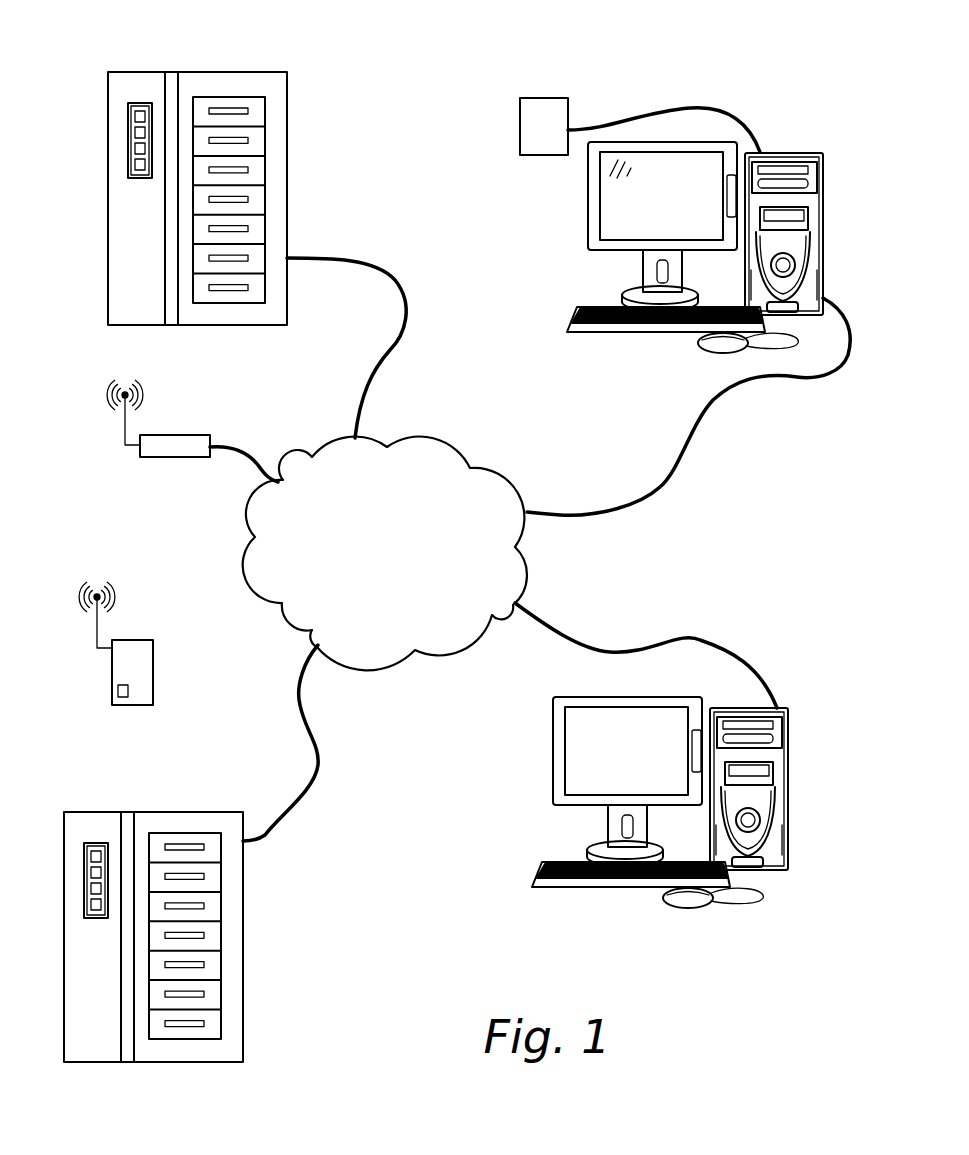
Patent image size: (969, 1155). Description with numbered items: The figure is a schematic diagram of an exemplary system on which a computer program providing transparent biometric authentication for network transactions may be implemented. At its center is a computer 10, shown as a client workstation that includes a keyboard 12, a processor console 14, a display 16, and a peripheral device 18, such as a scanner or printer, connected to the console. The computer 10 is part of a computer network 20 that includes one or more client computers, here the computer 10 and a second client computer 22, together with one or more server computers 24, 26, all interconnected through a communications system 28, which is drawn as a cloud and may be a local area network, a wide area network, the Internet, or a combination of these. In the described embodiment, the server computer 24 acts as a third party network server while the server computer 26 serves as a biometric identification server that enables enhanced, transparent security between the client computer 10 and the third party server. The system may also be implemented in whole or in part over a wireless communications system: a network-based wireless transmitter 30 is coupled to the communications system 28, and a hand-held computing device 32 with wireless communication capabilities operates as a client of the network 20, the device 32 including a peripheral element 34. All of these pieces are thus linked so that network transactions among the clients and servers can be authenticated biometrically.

The computer 10 is at (669, 278).
The keyboard 12 is at (647, 332).
The processor console 14 is at (827, 190).
The display 16 is at (587, 208).
The peripheral device 18 is at (520, 130).
The computer network 20 is at (687, 709).
The client computer 22 is at (790, 753).
The server computer 24 is at (203, 72).
The server computer 26 is at (237, 953).
The communications system 28 is at (440, 647).
The network-based wireless transmitter 30 is at (178, 435).
The hand-held computing device 32 is at (138, 674).
The peripheral element 34 is at (113, 692).